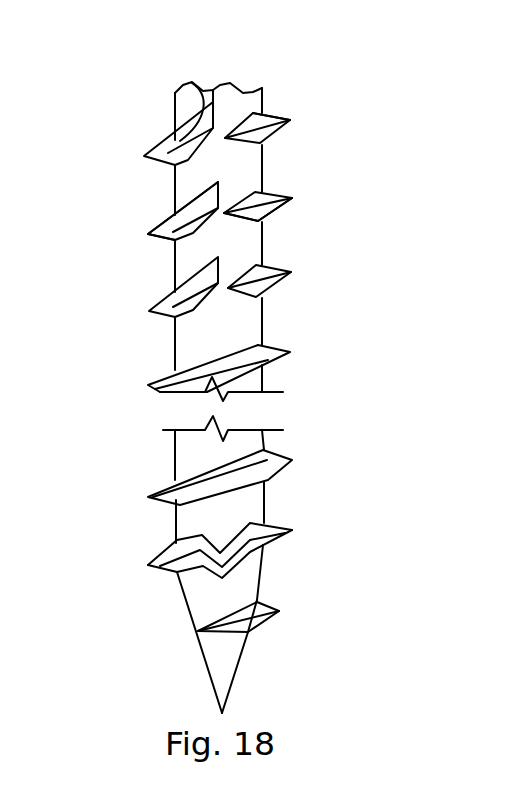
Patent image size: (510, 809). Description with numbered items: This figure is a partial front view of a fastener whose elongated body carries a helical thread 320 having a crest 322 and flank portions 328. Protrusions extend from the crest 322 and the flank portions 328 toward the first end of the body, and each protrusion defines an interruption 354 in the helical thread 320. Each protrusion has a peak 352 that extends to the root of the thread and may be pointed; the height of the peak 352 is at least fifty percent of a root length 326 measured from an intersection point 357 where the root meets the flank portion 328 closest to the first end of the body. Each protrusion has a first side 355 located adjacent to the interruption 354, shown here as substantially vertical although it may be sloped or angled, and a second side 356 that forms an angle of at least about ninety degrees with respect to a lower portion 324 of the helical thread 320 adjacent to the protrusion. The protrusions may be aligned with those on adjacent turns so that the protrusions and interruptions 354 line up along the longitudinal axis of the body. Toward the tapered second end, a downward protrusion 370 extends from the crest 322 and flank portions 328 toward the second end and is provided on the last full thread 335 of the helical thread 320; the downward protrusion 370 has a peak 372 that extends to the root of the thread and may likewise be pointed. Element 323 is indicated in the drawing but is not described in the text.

The helical thread 320 is at (236, 366).
The crest 322 is at (263, 220).
The protrusion 323 is at (266, 118).
The lower portion of the helical thread 324 is at (178, 133).
The root length 326 is at (167, 245).
The flank portions 328 is at (263, 288).
The last full thread 335 is at (262, 512).
The peak 352 is at (228, 79).
The interruption 354 is at (213, 143).
The first side 355 is at (264, 120).
The second side 356 is at (202, 92).
The intersection point 357 is at (185, 212).
The downward protrusion 370 is at (240, 557).
The peak of downward protrusion 372 is at (222, 572).